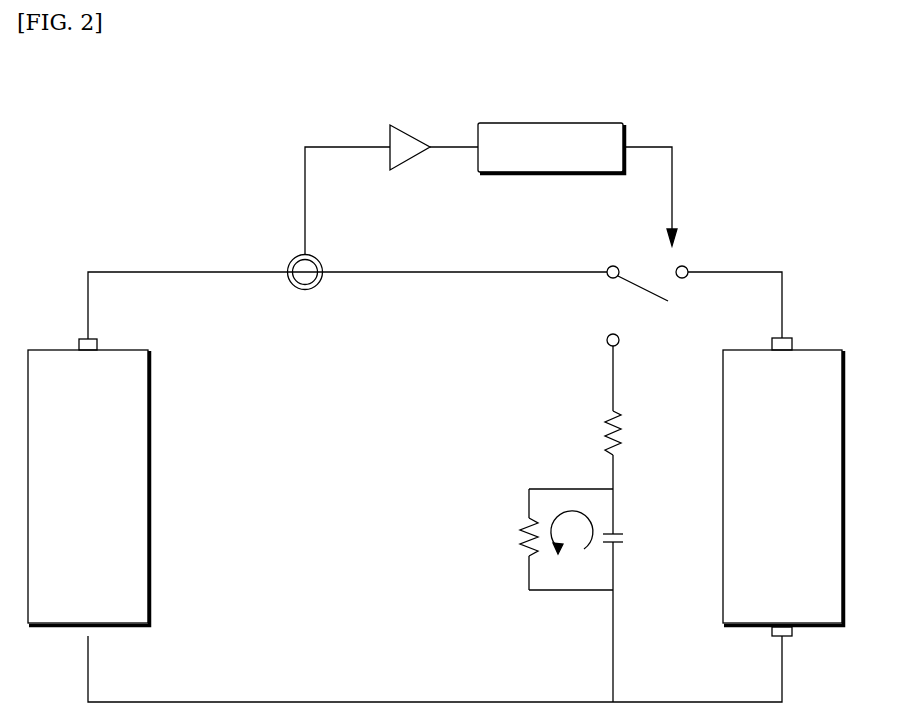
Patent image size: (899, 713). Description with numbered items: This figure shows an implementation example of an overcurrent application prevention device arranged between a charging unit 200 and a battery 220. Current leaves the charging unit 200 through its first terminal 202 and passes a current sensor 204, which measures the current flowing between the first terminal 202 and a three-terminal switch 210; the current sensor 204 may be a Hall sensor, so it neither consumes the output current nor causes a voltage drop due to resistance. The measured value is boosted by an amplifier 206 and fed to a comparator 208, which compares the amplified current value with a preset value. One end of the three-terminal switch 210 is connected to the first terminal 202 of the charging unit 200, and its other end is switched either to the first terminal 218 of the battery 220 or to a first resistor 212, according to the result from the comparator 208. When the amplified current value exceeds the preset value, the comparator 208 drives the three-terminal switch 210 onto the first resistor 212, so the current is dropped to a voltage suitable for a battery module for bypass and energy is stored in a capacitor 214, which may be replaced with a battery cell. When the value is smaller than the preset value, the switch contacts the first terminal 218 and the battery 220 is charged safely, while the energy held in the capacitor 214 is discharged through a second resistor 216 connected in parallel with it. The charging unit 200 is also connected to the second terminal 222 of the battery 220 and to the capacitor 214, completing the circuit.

The charging unit 200 is at (125, 348).
The first terminal of the charging unit 202 is at (76, 336).
The current sensor 204 is at (316, 284).
The amplifier 206 is at (410, 130).
The comparator 208 is at (548, 122).
The 3-terminal switch 210 is at (653, 296).
The first resistor 212 is at (605, 437).
The capacitor 214 is at (626, 535).
The second resistor 216 is at (519, 541).
The first terminal of the battery 218 is at (774, 336).
The battery 220 is at (818, 348).
The second terminal of the battery 222 is at (793, 631).